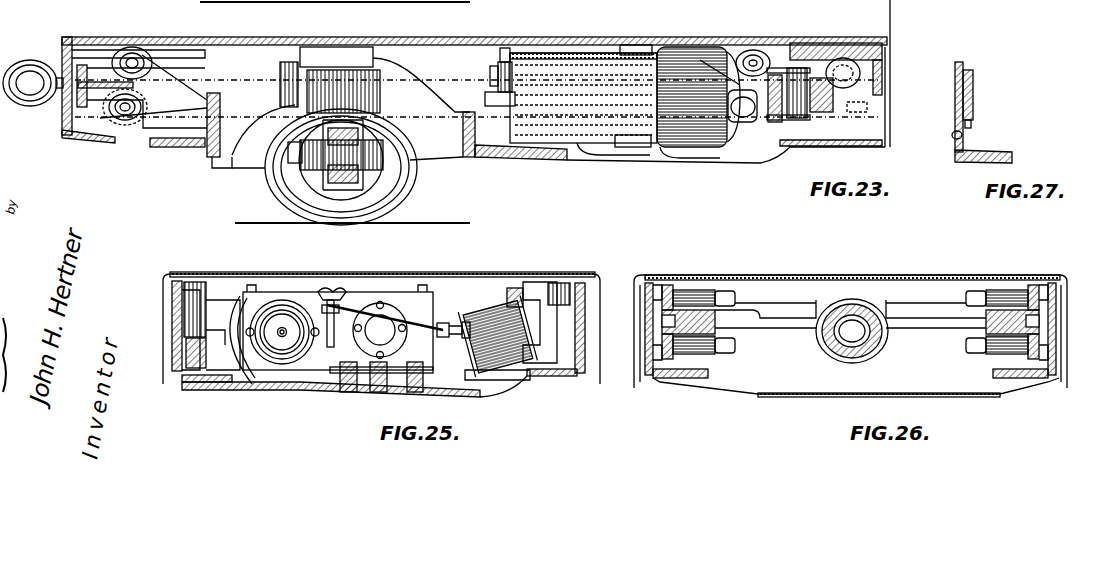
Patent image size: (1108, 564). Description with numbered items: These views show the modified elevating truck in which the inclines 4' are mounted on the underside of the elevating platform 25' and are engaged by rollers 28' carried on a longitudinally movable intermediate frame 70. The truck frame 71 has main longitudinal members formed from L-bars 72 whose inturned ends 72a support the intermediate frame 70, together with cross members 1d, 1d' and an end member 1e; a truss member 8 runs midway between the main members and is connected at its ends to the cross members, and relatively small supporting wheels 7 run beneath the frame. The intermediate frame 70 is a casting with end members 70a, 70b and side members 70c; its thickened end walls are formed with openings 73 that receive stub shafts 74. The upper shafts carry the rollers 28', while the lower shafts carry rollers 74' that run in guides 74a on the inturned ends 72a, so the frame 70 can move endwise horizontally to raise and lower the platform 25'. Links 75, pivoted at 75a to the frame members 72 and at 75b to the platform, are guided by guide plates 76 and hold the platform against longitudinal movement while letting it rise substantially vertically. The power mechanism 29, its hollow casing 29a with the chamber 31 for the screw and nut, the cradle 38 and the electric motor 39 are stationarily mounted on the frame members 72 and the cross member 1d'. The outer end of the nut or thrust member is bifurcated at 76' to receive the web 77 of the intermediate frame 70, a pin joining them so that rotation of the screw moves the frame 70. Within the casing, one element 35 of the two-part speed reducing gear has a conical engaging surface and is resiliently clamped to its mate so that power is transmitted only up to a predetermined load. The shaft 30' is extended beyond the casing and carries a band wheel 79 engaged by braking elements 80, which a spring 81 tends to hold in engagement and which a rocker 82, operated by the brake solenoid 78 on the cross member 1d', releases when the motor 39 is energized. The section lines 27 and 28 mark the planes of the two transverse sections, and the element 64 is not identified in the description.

In FIG. 23, the cross member 1d is at (189, 177).
In FIG. 23, the cross member 1d' is at (515, 152).
In FIG. 25, the cross member 1d' is at (372, 390).
In FIG. 23, the end member 1e is at (78, 37).
In FIG. 23, the incline 4' is at (520, 134).
In FIG. 25, the incline 4' is at (629, 326).
In FIG. 26, the incline 4' is at (1061, 325).
In FIG. 23, the supporting wheel 7 is at (395, 200).
In FIG. 25, the supporting wheel 7 is at (584, 345).
In FIG. 23, the truss member 8 is at (218, 170).
In FIG. 23, the elevating platform 25' is at (422, 26).
In FIG. 26, the elevating platform 25' is at (844, 260).
In FIG. 23, the section line 27— 27 is at (490, 189).
In FIG. 23, the section line 28— 28 is at (777, 104).
In FIG. 23, the roller 28' is at (441, 44).
In FIG. 25, the roller 28' is at (381, 291).
In FIG. 26, the roller 28' is at (854, 303).
In FIG. 23, the platform moving mechanism 29 is at (583, 98).
In FIG. 25, the platform moving mechanism 29 is at (338, 327).
In FIG. 26, the platform moving mechanism 29 is at (824, 350).
In FIG. 23, the hollow casing 29a is at (541, 117).
In FIG. 25, the hollow casing 29a is at (411, 351).
In FIG. 25, the shaft 30' is at (276, 374).
In FIG. 23, the chamber 31 is at (690, 150).
In FIG. 26, the chamber 31 is at (845, 358).
In FIG. 26, the gear element 35 is at (862, 346).
In FIG. 23, the cradle 38 is at (632, 48).
In FIG. 23, the electric motor 39 is at (672, 152).
In FIG. 25, the electric motor 39 is at (300, 300).
In FIG. 23, the lug 64 is at (868, 110).
In FIG. 25, the intermediate frame 70 is at (230, 300).
In FIG. 26, the intermediate frame 70 is at (772, 326).
In FIG. 23, the end member 70a is at (855, 85).
In FIG. 26, the end member 70a is at (915, 326).
In FIG. 23, the end member 70b is at (62, 58).
In FIG. 25, the end member 70b is at (185, 345).
In FIG. 23, the side member 70c is at (488, 96).
In FIG. 23, the truck frame 71 is at (70, 138).
In FIG. 25, the truck frame 71 is at (192, 390).
In FIG. 26, the truck frame 71 is at (690, 382).
In FIG. 23, the L-bar 72 is at (258, 130).
In FIG. 27, the L-bar 72 is at (955, 150).
In FIG. 25, the L-bar 72 is at (176, 305).
In FIG. 26, the L-bar 72 is at (648, 380).
In FIG. 23, the inturned end 72a is at (120, 140).
In FIG. 27, the inturned end 72a is at (1005, 154).
In FIG. 25, the inturned end 72a is at (240, 388).
In FIG. 26, the inturned end 72a is at (710, 392).
In FIG. 26, the opening 73 is at (722, 290).
In FIG. 23, the stub shaft 74 is at (456, 96).
In FIG. 25, the stub shaft 74 is at (507, 313).
In FIG. 26, the stub shaft 74 is at (850, 331).
In FIG. 23, the roller 74' is at (384, 73).
In FIG. 26, the roller 74' is at (841, 384).
In FIG. 23, the guide 74a is at (178, 148).
In FIG. 26, the guide 74a is at (690, 376).
In FIG. 23, the link 75 is at (455, 45).
In FIG. 27, the link 75 is at (965, 70).
In FIG. 25, the link 75 is at (163, 290).
In FIG. 26, the link 75 is at (640, 285).
In FIG. 23, the link pivot 75a is at (300, 48).
In FIG. 23, the link pivot 75b is at (855, 43).
In FIG. 27, the guide plate 76 is at (987, 96).
In FIG. 23, the bifurcation 76' is at (843, 45).
In FIG. 23, the web portion 77 is at (775, 125).
In FIG. 25, the solenoid 78 is at (495, 385).
In FIG. 25, the band wheel 79 is at (278, 300).
In FIG. 25, the braking element 80 is at (312, 292).
In FIG. 23, the spring 81 is at (525, 48).
In FIG. 25, the spring 81 is at (352, 310).
In FIG. 23, the rocker 82 is at (490, 72).
In FIG. 25, the rocker 82 is at (335, 292).